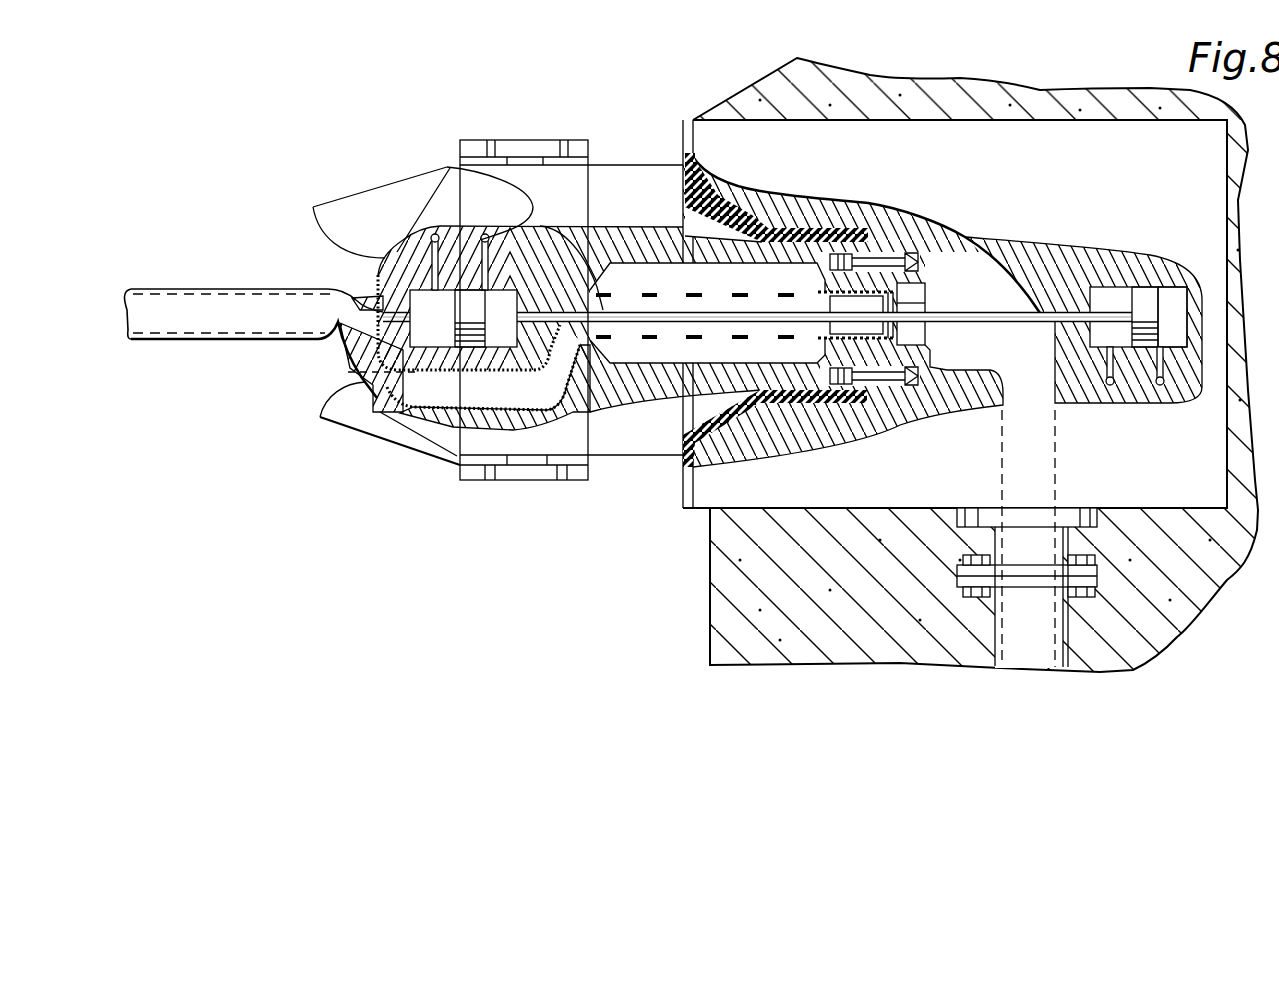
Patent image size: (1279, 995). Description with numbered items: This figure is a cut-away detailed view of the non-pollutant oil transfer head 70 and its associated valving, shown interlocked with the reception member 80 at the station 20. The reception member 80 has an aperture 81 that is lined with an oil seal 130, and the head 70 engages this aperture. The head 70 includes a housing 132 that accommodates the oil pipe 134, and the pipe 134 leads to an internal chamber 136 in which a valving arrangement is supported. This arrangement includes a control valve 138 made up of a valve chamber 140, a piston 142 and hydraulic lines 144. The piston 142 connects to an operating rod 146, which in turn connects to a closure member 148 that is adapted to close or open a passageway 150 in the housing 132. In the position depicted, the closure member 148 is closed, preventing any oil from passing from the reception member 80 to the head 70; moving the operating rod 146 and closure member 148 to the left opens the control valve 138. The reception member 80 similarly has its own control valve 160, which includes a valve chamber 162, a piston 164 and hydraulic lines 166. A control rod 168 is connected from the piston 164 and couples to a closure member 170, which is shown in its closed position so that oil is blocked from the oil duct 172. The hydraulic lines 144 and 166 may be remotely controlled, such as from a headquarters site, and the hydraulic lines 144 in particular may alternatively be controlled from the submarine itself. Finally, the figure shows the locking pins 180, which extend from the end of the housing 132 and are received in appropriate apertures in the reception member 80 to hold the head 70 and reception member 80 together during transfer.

The station 20 is at (707, 597).
The oil transfer head 70 is at (607, 166).
The reception member 80 is at (714, 490).
The aperture 81 is at (715, 193).
The oil seal 130 is at (780, 398).
The housing 132 is at (613, 440).
The oil pipe 134 is at (290, 325).
The internal chamber 136 is at (677, 352).
The control valve 138 is at (633, 303).
The valve chamber 140 is at (375, 290).
The piston 142 is at (470, 300).
The hydraulic lines 144 is at (430, 297).
The operating rod 146 is at (673, 300).
The closure member 148 is at (857, 310).
The passageway 150 is at (893, 418).
The control valve 160 is at (1060, 305).
The valve chamber 162 is at (1178, 300).
The piston 164 is at (1145, 298).
The hydraulic lines 166 is at (1160, 386).
The control rod 168 is at (1003, 323).
The closure member 170 is at (923, 303).
The oil duct 172 is at (1058, 442).
The locking pins 180 is at (887, 262).